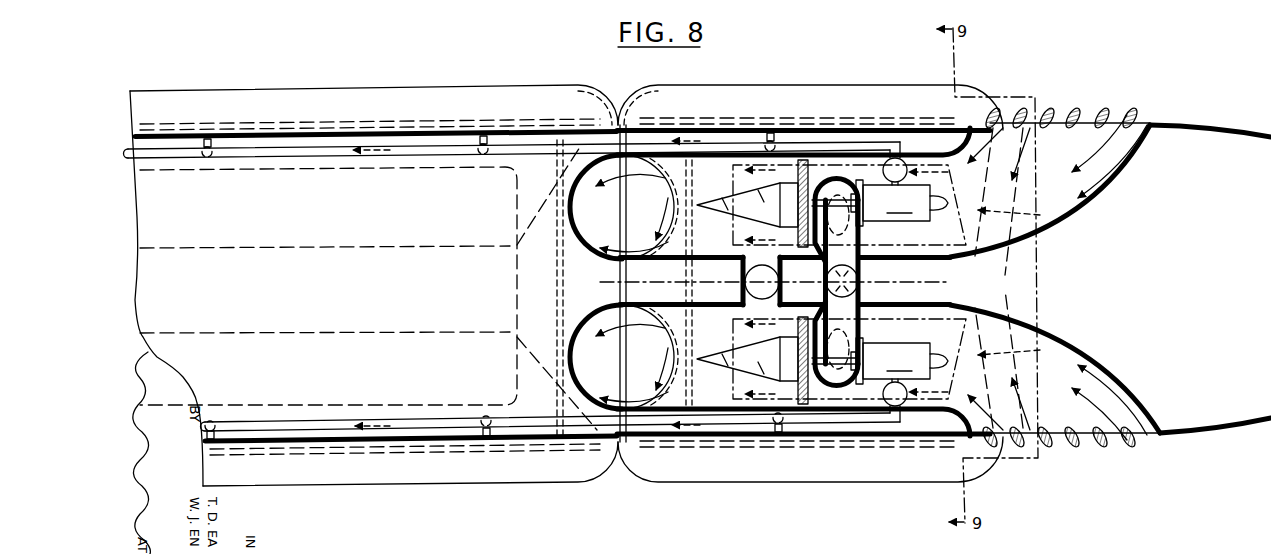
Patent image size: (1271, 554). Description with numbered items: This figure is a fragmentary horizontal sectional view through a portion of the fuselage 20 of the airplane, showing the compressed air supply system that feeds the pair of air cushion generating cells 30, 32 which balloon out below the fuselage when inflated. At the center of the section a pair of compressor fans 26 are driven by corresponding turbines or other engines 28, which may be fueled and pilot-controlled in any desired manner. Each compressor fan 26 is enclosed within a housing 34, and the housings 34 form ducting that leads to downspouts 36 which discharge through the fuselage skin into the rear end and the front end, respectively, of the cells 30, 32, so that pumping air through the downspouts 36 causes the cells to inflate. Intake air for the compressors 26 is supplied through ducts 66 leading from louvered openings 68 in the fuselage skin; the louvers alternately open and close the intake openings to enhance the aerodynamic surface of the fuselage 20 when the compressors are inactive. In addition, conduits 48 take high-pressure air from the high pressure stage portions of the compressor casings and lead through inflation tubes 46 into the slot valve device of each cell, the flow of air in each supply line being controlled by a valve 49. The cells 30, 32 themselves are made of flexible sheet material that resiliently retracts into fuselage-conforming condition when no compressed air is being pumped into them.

The fuselage 20 is at (1222, 123).
The compressor fan 26 is at (800, 201).
The turbine engine 28 is at (880, 282).
The air cushion generating cell 30 is at (832, 485).
The air cushion generating cell 32 is at (450, 487).
The fan housing duct 34 is at (863, 268).
The downspout 36 is at (600, 250).
The inflation tube 46 is at (207, 136).
The conduit 48 is at (823, 141).
The valve 49 is at (212, 156).
The air intake duct 66 is at (1077, 226).
The louvered opening 68 is at (1083, 115).